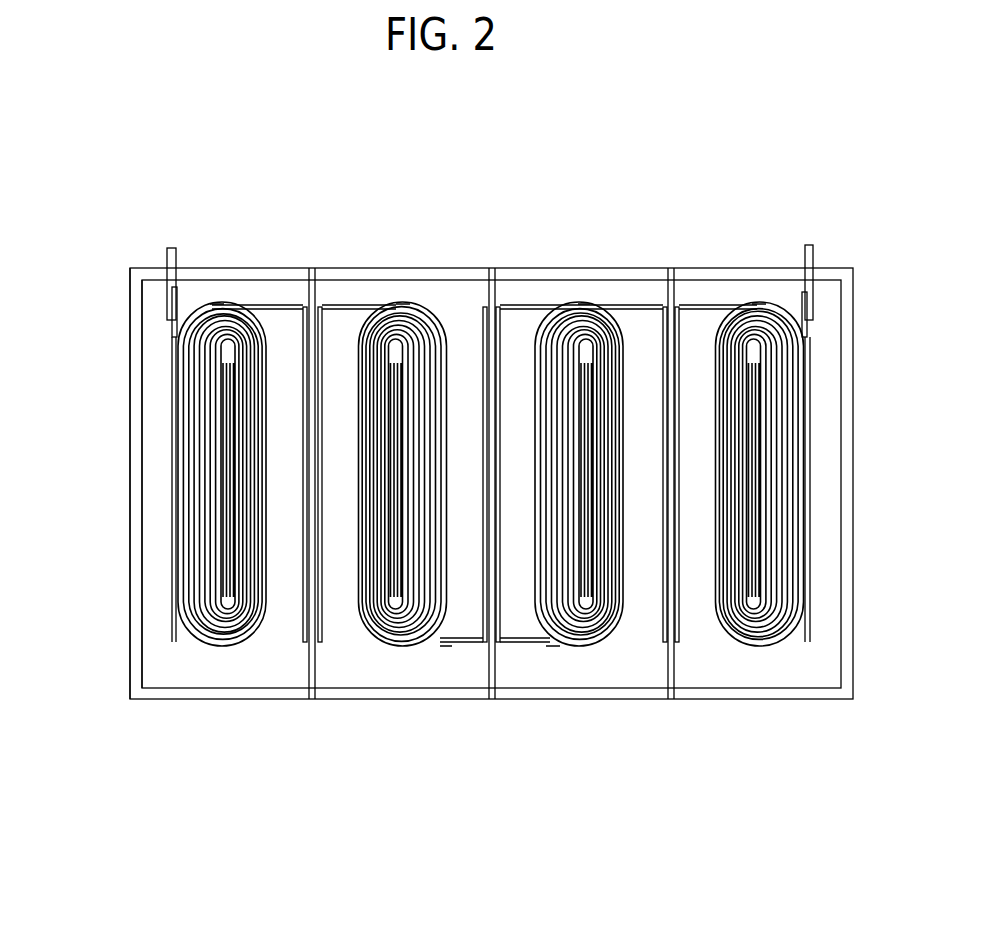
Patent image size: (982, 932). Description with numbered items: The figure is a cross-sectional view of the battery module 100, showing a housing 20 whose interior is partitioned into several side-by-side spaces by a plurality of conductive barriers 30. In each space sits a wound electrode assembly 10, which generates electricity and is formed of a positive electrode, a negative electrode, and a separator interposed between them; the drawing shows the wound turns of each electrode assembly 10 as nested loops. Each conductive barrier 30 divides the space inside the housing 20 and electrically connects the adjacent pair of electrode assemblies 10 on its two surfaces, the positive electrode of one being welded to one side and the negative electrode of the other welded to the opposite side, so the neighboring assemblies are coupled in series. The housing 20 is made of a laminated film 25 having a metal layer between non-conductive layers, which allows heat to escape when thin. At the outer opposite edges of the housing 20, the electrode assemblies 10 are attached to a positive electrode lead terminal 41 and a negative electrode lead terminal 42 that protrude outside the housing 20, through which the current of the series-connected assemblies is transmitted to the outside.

The battery module 100 is at (557, 215).
The housing 20 is at (104, 387).
The laminated film 25 is at (131, 488).
The electrode assembly 10 is at (195, 655).
The conductive barrier 30 is at (313, 662).
The positive electrode lead terminal 41 is at (809, 246).
The negative electrode lead terminal 42 is at (171, 248).